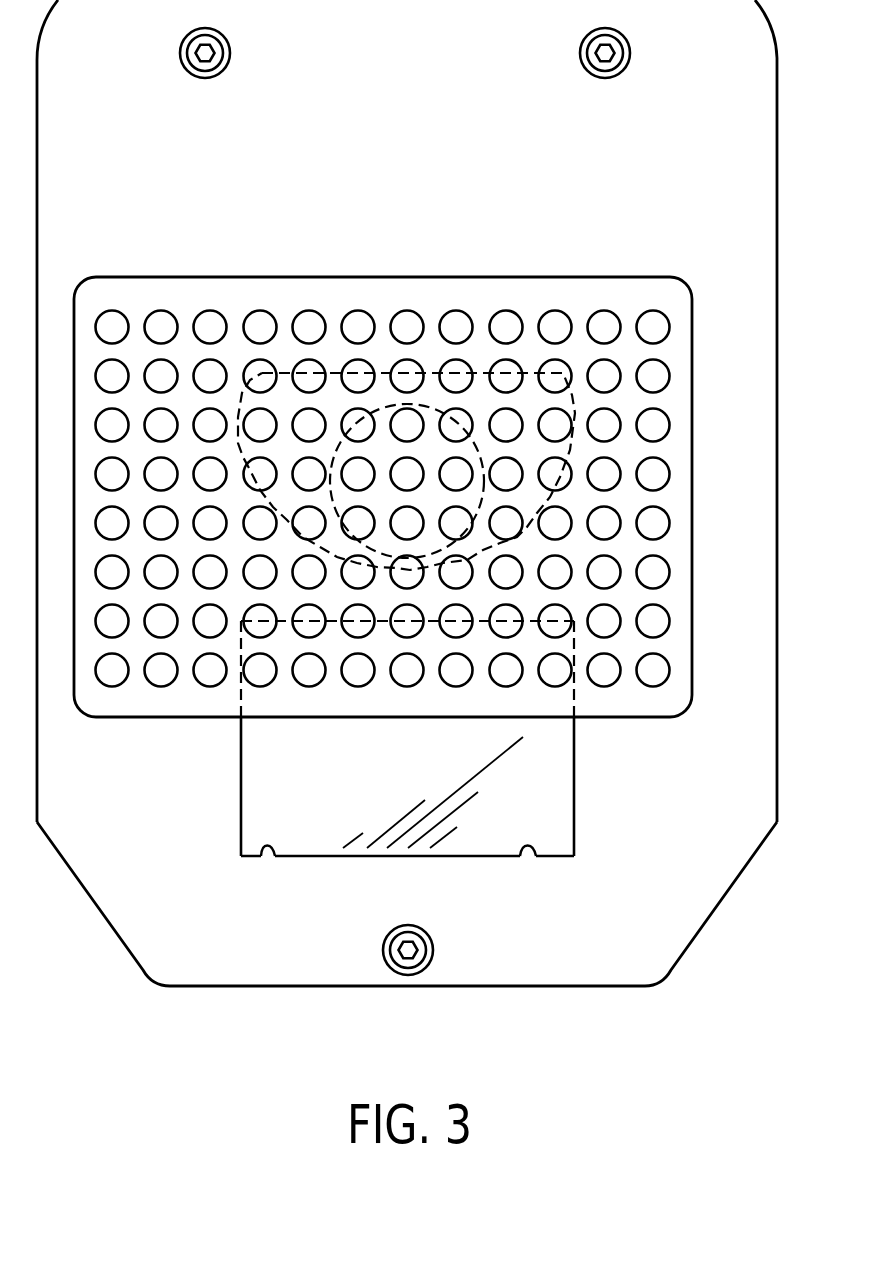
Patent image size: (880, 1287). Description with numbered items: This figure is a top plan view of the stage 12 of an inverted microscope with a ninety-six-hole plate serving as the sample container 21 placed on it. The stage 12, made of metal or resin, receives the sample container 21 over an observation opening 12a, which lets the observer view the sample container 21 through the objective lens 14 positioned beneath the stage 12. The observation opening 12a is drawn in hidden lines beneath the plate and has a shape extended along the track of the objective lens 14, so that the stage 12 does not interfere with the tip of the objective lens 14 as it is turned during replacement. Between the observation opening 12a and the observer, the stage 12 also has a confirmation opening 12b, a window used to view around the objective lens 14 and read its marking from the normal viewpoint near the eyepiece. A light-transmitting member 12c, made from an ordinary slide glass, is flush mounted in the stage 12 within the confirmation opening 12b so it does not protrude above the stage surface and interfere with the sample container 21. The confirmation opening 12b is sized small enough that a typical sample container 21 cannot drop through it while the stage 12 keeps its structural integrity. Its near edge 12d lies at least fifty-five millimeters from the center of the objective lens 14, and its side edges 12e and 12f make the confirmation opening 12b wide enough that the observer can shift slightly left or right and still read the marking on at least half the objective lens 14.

The stage 12 is at (460, 972).
The observation opening 12a is at (573, 398).
The confirmation opening 12b is at (261, 856).
The light-transmitting member 12c is at (330, 838).
The near edge 12d is at (520, 856).
The side edge 12e is at (240, 800).
The side edge 12f is at (575, 797).
The objective lens 14 is at (455, 497).
The sample container 21 is at (692, 622).